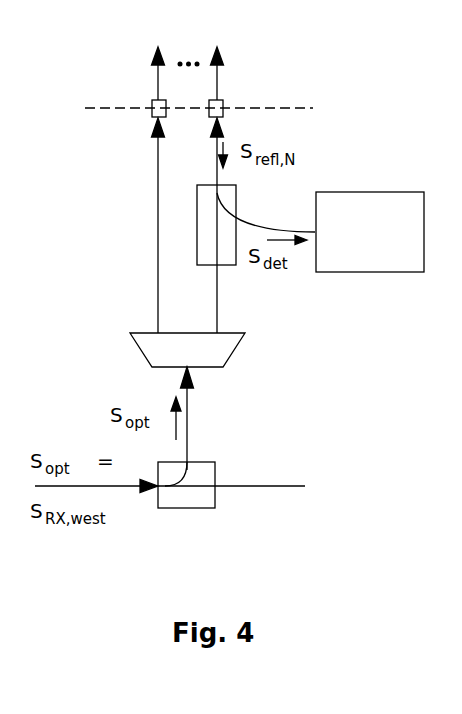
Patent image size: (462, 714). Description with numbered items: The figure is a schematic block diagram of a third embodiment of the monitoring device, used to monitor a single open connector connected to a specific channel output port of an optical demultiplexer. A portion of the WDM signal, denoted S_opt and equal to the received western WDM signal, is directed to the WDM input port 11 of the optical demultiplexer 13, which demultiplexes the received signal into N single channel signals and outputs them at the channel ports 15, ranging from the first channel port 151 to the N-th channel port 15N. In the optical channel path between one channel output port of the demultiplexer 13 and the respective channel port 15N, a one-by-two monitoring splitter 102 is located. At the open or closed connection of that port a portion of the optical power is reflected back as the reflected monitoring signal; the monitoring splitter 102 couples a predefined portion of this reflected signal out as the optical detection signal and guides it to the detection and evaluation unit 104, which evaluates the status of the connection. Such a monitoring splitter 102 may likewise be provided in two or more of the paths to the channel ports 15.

The channel ports 15 is at (184, 190).
The first channel port 151 is at (153, 104).
The N-th channel port 15N is at (213, 110).
The 1×2 monitoring splitter 102 is at (223, 252).
The detection and evaluation unit 104 is at (390, 256).
The optical demultiplexer 13 is at (213, 349).
The WDM input port 11 is at (182, 370).